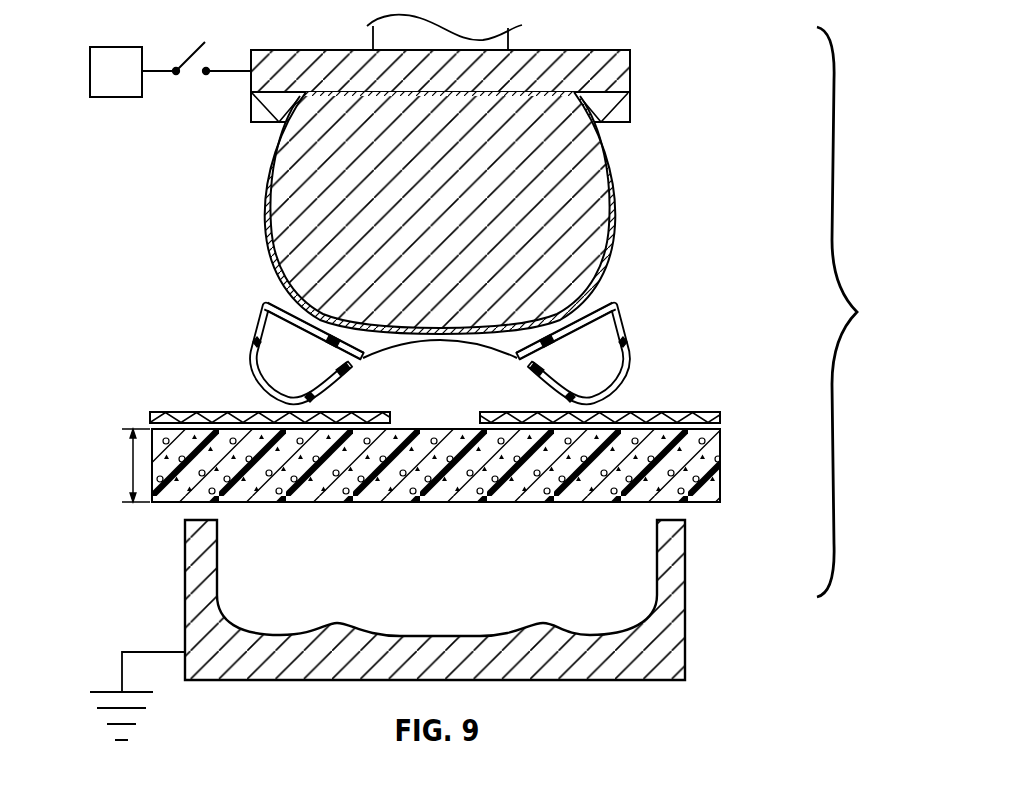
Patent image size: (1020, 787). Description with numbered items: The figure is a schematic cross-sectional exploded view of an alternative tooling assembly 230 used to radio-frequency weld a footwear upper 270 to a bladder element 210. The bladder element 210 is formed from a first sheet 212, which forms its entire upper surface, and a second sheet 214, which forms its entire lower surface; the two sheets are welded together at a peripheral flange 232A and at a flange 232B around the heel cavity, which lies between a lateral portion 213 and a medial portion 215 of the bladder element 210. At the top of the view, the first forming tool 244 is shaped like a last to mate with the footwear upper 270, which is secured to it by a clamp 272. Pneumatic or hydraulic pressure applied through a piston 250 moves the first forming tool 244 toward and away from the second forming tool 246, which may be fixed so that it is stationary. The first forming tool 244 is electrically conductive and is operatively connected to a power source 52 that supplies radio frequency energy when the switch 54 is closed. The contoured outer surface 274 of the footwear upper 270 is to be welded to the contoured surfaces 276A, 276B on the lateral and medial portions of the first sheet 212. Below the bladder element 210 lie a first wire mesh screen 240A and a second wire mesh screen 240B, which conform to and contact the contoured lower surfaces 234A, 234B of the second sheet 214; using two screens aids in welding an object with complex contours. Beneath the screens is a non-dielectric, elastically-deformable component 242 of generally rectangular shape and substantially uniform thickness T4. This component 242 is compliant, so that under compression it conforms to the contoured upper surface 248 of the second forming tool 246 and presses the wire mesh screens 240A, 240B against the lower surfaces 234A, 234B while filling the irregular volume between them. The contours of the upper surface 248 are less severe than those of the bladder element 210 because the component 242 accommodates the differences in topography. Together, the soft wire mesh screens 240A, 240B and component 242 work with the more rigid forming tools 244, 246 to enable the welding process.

The power source 52 is at (117, 53).
The switch 54 is at (212, 50).
The piston 250 is at (522, 25).
The clamp 272 is at (251, 105).
The first forming tool 244 is at (295, 200).
The footwear upper 270 is at (611, 208).
The tooling assembly 230 is at (407, 182).
The outer surface 274 is at (562, 318).
The contoured surface 276A is at (320, 345).
The contoured surface 276B is at (560, 345).
The peripheral flange 232A is at (262, 310).
The flange 232B is at (404, 320).
The first sheet 212 is at (283, 312).
The lateral portion 213 is at (250, 344).
The second sheet 214 is at (255, 373).
The medial portion 215 is at (640, 352).
The bladder element 210 is at (422, 330).
The lower surface 234A is at (343, 380).
The lower surface 234B is at (548, 383).
The first wire mesh screen 240A is at (150, 413).
The second wire mesh screen 240B is at (722, 418).
The thickness T4 is at (128, 468).
The non-dielectric, elastically-deformable component 242 is at (722, 482).
The upper surface 248 is at (582, 632).
The second forming tool 246 is at (320, 672).